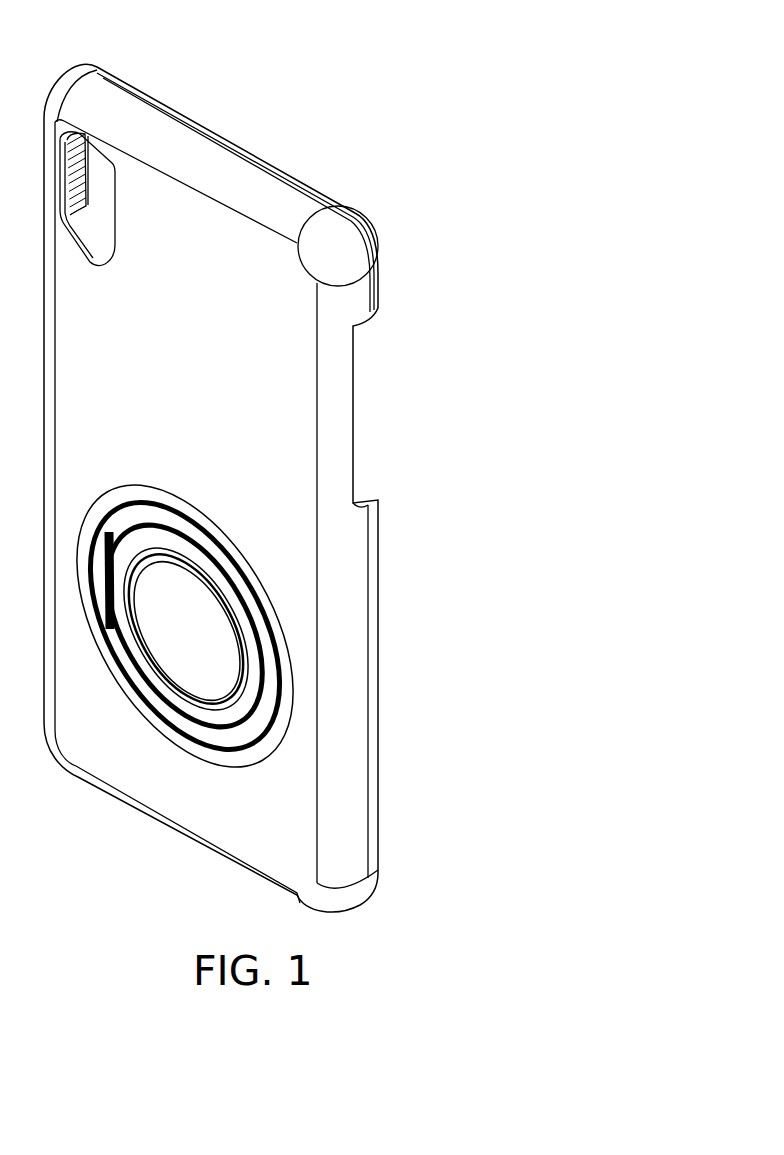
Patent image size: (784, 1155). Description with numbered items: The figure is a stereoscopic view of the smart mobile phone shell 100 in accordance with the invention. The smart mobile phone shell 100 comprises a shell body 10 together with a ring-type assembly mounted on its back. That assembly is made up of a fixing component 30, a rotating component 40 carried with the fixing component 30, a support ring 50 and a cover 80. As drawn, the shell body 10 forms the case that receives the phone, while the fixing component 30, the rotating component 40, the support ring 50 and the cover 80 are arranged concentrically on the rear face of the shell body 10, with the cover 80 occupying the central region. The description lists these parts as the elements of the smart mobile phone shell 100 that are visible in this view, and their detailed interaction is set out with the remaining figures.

The smart mobile phone shell 100 is at (292, 122).
The shell body 10 is at (362, 708).
The fixing component 30 is at (122, 490).
The rotating component 40 is at (208, 517).
The support ring 50 is at (143, 667).
The cover 80 is at (207, 645).